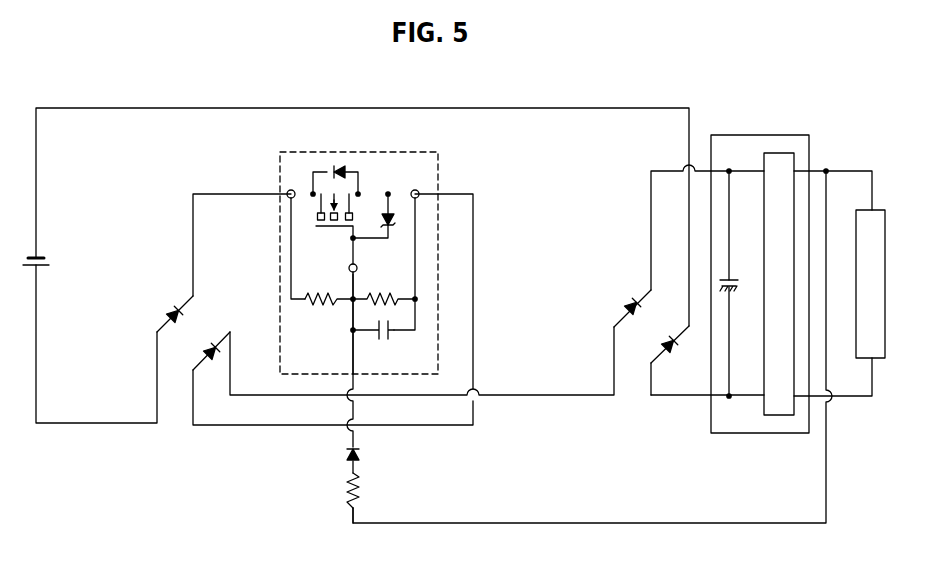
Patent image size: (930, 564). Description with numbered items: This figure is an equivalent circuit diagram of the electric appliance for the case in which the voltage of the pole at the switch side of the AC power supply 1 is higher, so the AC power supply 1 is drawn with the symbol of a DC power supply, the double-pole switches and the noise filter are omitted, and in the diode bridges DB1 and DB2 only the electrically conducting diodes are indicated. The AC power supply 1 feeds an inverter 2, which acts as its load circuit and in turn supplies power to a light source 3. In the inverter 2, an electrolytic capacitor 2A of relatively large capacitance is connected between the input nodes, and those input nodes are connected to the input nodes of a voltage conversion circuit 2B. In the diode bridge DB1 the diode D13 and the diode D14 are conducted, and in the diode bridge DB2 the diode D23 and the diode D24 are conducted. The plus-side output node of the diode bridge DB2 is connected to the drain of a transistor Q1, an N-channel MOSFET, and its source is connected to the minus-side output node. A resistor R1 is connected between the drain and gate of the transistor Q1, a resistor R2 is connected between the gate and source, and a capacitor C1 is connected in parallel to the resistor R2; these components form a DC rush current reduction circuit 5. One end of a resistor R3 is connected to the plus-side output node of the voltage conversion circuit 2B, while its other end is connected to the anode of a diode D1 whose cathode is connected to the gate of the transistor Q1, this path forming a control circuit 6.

The AC power supply 1 is at (48, 258).
The inverter 2 is at (764, 252).
The electrolytic capacitor 2A is at (731, 289).
The voltage conversion circuit 2B is at (778, 153).
The light source 3 is at (872, 210).
The DC rush current reduction circuit 5 is at (425, 152).
The control circuit 6 is at (344, 517).
The diode bridge DB1 is at (622, 290).
The diode bridge DB2 is at (165, 296).
The diode D1 is at (362, 452).
The diode D13 is at (626, 312).
The diode D14 is at (673, 352).
The diode D23 is at (218, 358).
The diode D24 is at (168, 310).
The transistor Q1 is at (330, 234).
The resistor R1 is at (318, 304).
The resistor R2 is at (378, 295).
The resistor R3 is at (362, 493).
The capacitor C1 is at (390, 336).